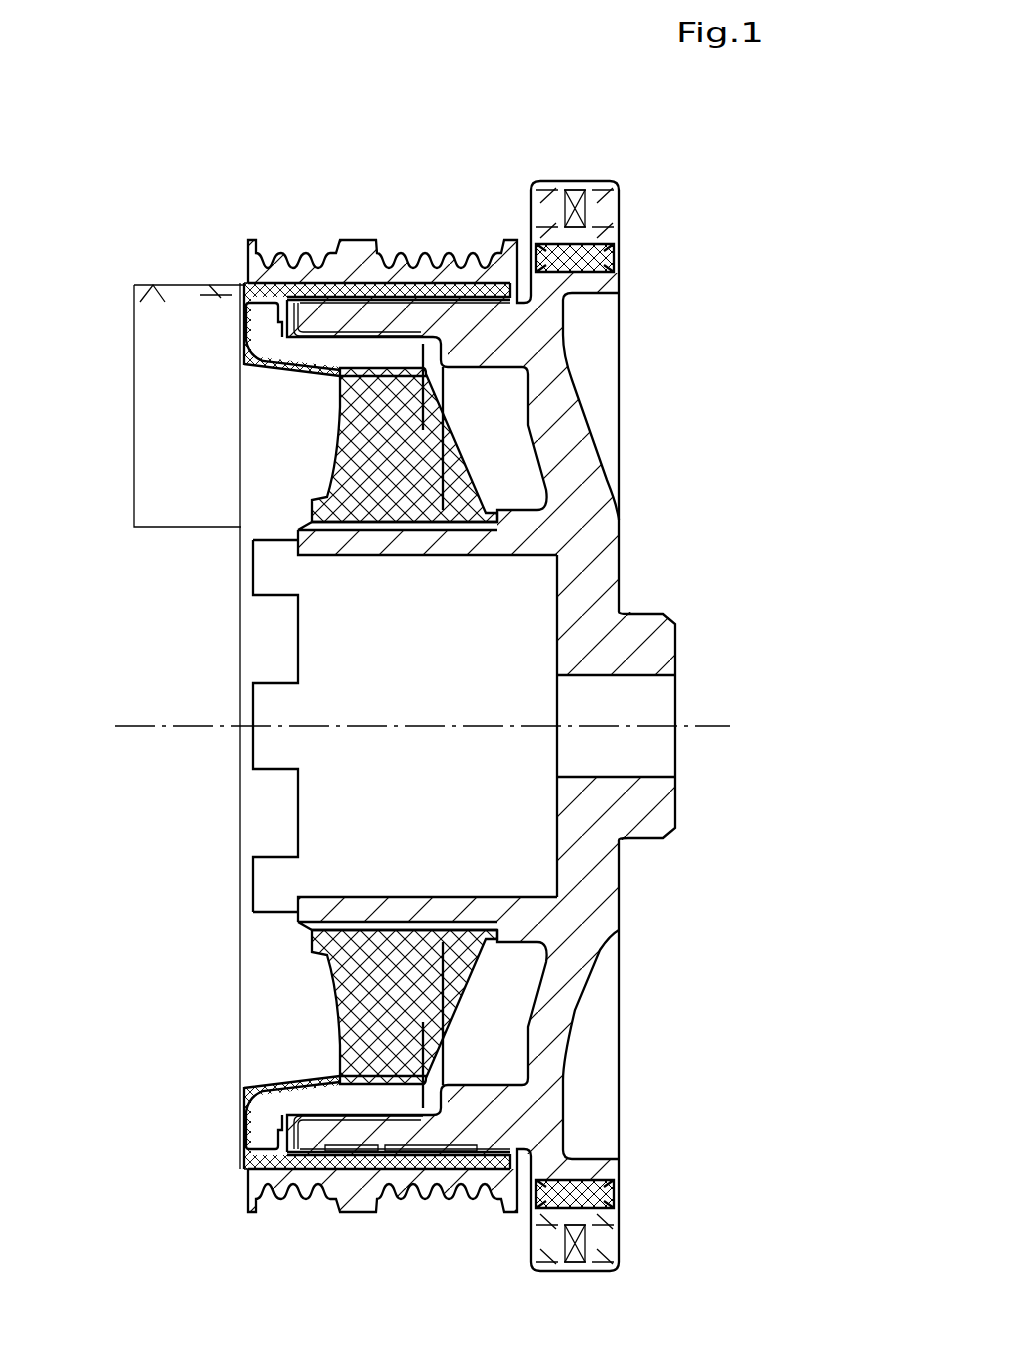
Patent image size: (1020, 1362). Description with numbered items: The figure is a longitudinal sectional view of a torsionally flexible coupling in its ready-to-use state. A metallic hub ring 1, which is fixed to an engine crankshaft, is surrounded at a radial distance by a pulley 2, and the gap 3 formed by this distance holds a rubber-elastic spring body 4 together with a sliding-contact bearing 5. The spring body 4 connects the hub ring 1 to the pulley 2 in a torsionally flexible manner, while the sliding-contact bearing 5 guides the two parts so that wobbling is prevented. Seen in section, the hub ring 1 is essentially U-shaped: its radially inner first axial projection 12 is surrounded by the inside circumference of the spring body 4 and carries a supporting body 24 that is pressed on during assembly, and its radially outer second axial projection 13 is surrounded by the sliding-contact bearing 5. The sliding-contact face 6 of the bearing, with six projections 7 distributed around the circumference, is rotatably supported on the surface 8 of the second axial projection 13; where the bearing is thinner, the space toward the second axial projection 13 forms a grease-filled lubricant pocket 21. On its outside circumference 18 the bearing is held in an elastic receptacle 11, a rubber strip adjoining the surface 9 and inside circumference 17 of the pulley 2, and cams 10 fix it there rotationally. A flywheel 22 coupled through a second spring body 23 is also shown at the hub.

The hub ring 1 is at (588, 586).
The pulley 2 is at (346, 248).
The gap 3 is at (134, 400).
The spring body 4 is at (355, 442).
The sliding-contact bearing 5 is at (316, 296).
The sliding-contact face 6 is at (425, 302).
The projection 7 is at (458, 300).
The surface 8 is at (483, 302).
The surface of the pulley 9 is at (355, 283).
The cam 10 is at (370, 293).
The elastic receptacle 11 is at (395, 288).
The first axial projection 12 is at (335, 537).
The second axial projection 13 is at (328, 318).
The inside circumference of the pulley 17 is at (163, 302).
The outside circumference of the sliding-contact bearing 18 is at (221, 298).
The lubricant pocket 21 is at (382, 1147).
The flywheel 22 is at (599, 214).
The second spring body 23 is at (617, 275).
The supporting body 24 is at (367, 523).